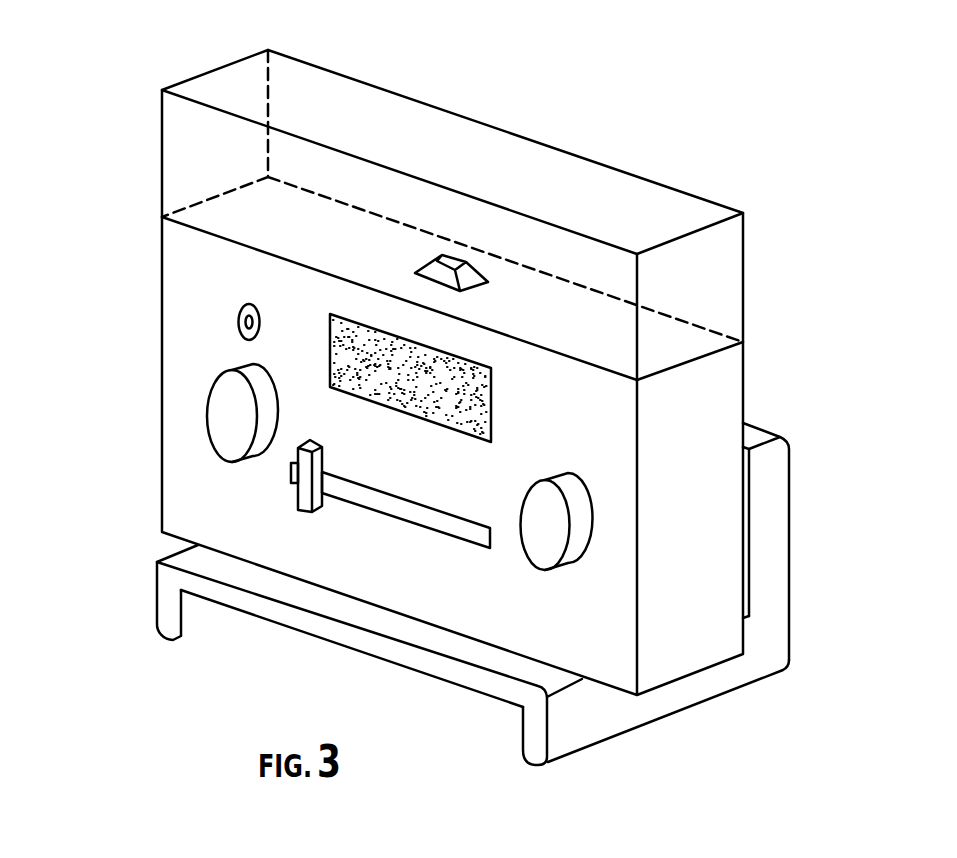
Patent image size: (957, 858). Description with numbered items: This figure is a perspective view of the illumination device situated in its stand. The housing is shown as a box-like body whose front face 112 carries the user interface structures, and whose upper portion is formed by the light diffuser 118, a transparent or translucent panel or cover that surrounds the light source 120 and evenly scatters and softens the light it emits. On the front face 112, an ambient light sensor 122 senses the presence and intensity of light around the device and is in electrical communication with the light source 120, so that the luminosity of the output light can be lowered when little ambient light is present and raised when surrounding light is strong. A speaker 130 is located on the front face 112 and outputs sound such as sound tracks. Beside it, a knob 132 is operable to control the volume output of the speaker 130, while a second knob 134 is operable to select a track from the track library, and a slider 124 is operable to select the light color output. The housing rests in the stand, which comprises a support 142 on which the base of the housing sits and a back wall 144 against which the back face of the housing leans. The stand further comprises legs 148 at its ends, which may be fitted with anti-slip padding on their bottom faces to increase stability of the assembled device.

The front face 112 is at (535, 618).
The light diffuser 118 is at (713, 255).
The light source 120 is at (452, 260).
The ambient light sensor 122 is at (240, 311).
The slider 124 is at (306, 493).
The speaker 130 is at (463, 380).
The knob 132 is at (225, 413).
The knob 134 is at (553, 537).
The support 142 is at (390, 623).
The back wall 144 is at (770, 474).
The legs 148 is at (165, 609).